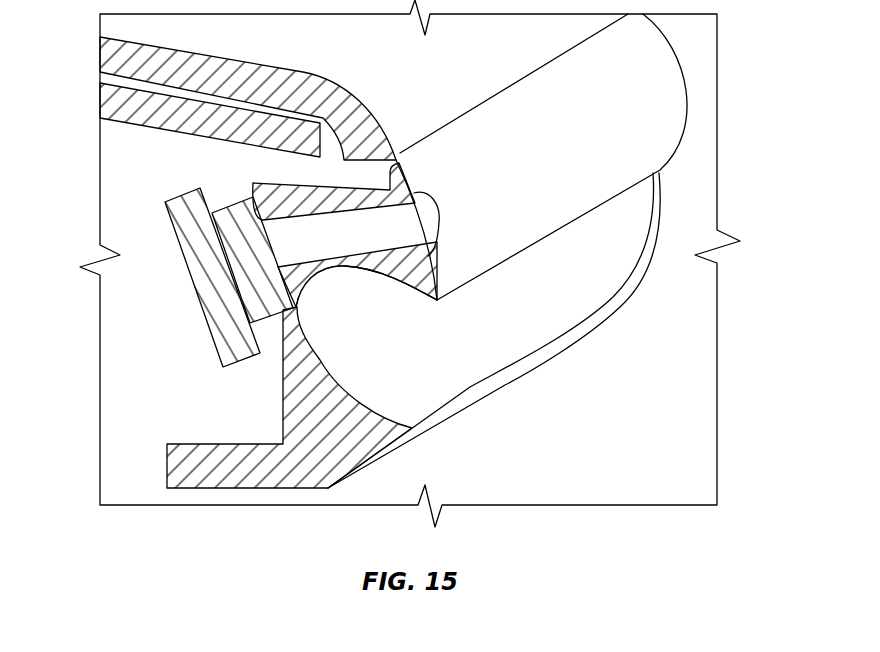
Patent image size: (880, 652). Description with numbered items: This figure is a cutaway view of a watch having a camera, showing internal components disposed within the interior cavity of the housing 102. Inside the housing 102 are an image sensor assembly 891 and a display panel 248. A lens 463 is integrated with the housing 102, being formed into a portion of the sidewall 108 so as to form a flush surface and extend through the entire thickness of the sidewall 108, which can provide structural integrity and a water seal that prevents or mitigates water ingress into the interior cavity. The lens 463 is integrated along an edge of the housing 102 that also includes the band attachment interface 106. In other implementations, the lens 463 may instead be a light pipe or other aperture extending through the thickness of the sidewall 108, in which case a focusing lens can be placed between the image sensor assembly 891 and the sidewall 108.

The housing 102 is at (648, 55).
The sidewall 108 is at (646, 120).
The display panel 248 is at (108, 100).
The lens 463 is at (402, 220).
The band attachment interface 106 is at (420, 337).
The image sensor assembly 891 is at (214, 337).